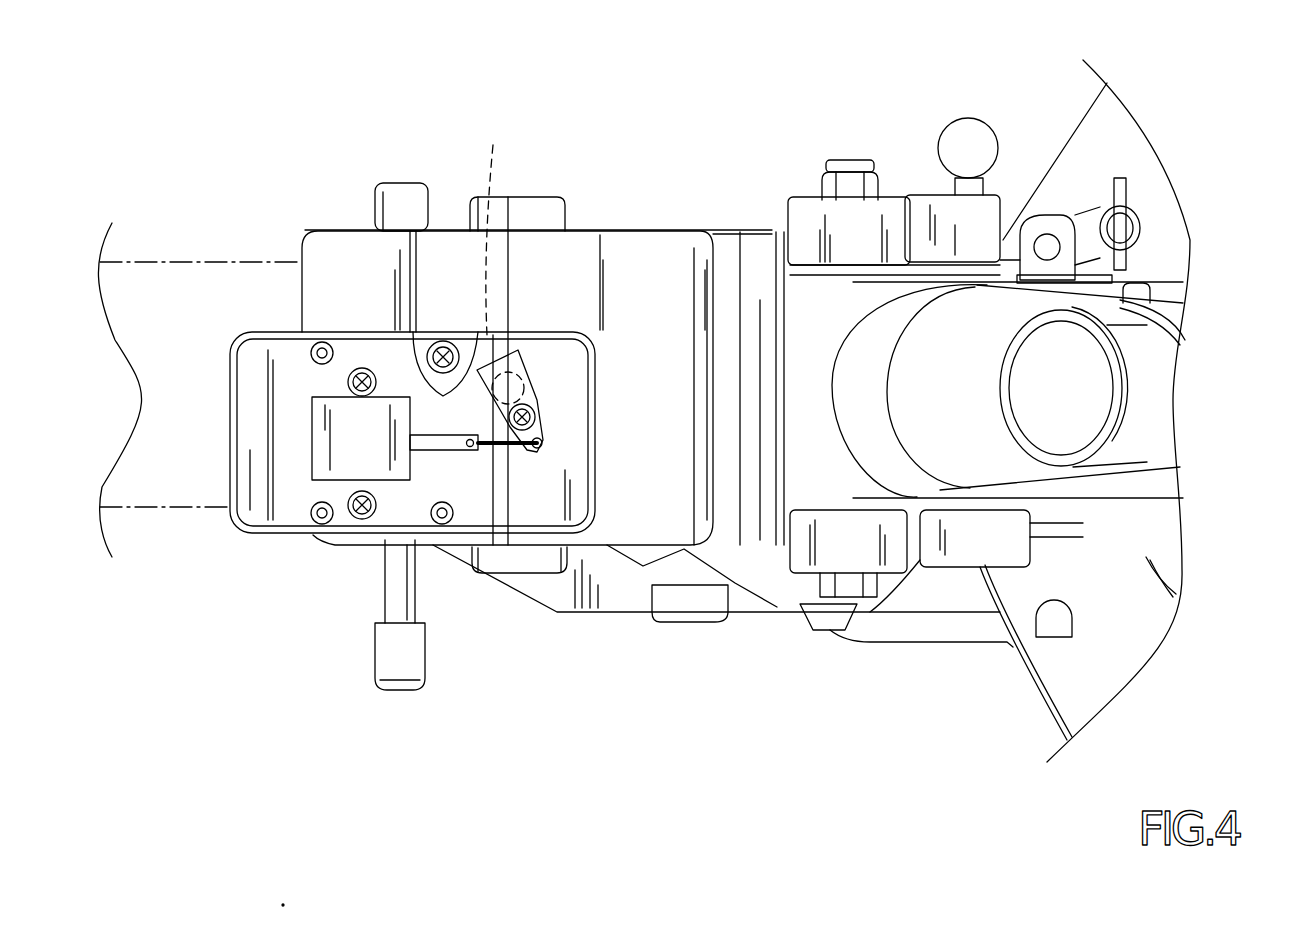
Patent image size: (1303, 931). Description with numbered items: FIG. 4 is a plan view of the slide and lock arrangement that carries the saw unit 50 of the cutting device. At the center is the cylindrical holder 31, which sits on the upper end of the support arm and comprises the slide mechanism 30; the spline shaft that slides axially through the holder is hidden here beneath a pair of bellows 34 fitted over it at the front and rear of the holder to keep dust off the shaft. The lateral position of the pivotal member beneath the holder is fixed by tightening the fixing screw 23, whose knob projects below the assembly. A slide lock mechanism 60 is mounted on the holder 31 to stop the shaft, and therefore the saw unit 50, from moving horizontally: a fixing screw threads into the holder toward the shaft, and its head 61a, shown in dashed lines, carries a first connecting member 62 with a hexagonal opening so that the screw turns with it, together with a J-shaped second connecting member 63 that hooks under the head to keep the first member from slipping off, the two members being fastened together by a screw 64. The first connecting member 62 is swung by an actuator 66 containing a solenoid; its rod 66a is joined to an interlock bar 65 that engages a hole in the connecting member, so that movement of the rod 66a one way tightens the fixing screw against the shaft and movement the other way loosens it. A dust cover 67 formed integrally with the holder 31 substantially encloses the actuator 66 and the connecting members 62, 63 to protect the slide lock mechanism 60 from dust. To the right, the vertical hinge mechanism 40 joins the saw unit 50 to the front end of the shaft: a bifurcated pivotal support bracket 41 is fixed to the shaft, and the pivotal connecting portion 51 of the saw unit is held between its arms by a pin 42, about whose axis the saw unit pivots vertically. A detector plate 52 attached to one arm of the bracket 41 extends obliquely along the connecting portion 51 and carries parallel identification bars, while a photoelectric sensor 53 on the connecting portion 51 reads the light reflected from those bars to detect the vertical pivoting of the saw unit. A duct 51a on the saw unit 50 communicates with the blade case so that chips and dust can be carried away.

The fixing screw 23 is at (387, 652).
The slide mechanism 30 is at (450, 148).
The cylindrical holder 31 is at (630, 245).
The bellows 34 is at (130, 262).
The vertical hinge mechanism 40 is at (910, 178).
The pivotal support bracket 41 is at (808, 225).
The pin 42 is at (848, 175).
The saw unit 50 is at (912, 402).
The pivotal connecting portion 51 is at (817, 430).
The duct 51a is at (1143, 425).
The detector plate 52 is at (960, 520).
The photoelectric sensor 53 is at (1003, 557).
The slide lock mechanism 60 is at (246, 548).
The head of the fixing screw 61a is at (514, 223).
The first connecting member 62 is at (553, 425).
The second connecting member 63 is at (535, 356).
The screw 64 is at (540, 450).
The interlock bar 65 is at (493, 450).
The actuator 66 is at (345, 465).
The rod 66a is at (432, 450).
The dust cover 67 is at (232, 440).